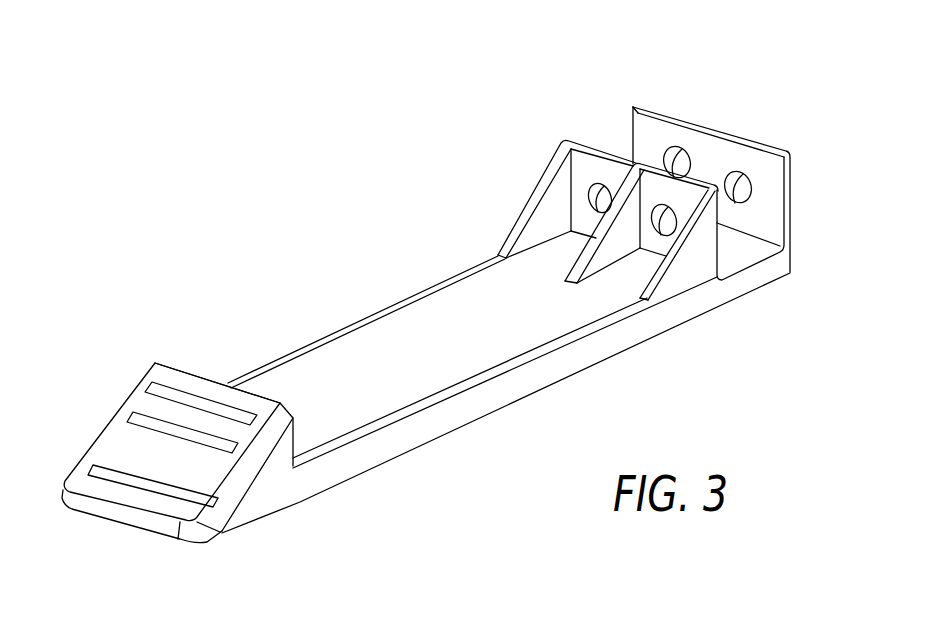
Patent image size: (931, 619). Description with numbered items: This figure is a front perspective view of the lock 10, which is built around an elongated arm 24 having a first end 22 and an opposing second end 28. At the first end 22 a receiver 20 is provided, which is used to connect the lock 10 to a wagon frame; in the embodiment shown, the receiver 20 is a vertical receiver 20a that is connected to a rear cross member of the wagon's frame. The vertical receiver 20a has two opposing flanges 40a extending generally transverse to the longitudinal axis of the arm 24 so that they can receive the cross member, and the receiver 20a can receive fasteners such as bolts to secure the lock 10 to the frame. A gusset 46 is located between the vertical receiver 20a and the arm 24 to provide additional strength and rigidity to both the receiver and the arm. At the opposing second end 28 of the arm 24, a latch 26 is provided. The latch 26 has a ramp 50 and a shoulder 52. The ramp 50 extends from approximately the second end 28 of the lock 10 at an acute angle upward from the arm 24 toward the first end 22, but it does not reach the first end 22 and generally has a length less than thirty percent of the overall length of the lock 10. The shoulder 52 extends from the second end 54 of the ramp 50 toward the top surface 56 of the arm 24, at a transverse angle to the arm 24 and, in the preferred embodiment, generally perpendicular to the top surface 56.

The lock 10 is at (802, 203).
The receiver 20 is at (611, 188).
The vertical receiver 20a is at (708, 126).
The first end 22 is at (760, 272).
The arm 24 is at (492, 343).
The latch 26 is at (163, 438).
The second end 28 is at (130, 513).
The opposing flanges 40a is at (611, 194).
The gusset 46 is at (528, 202).
The ramp 50 is at (170, 443).
The shoulder 52 is at (298, 445).
The second end of the ramp 54 is at (183, 372).
The top surface 56 is at (350, 403).